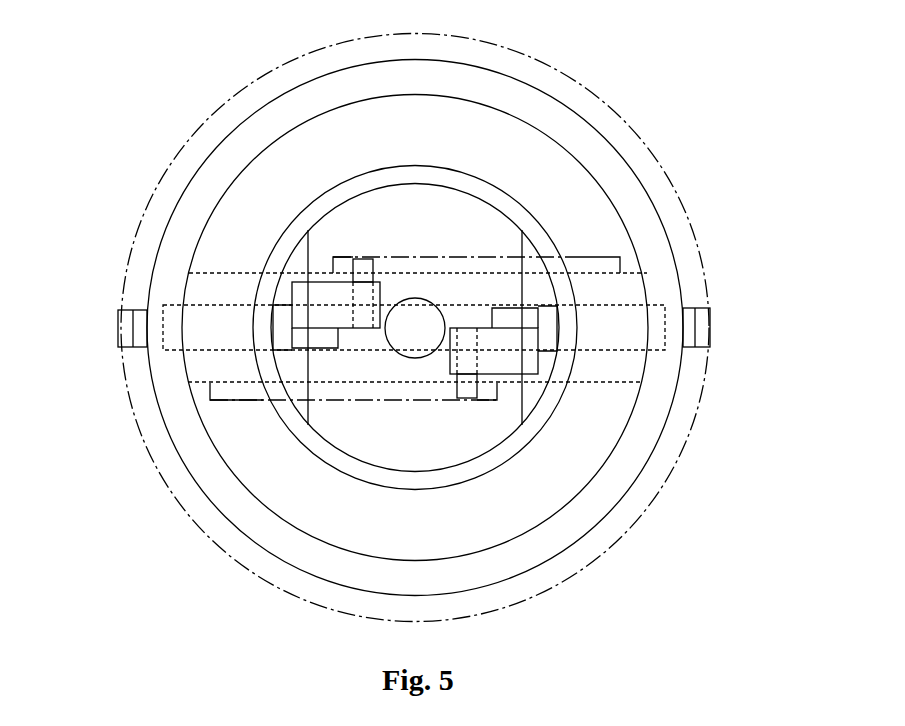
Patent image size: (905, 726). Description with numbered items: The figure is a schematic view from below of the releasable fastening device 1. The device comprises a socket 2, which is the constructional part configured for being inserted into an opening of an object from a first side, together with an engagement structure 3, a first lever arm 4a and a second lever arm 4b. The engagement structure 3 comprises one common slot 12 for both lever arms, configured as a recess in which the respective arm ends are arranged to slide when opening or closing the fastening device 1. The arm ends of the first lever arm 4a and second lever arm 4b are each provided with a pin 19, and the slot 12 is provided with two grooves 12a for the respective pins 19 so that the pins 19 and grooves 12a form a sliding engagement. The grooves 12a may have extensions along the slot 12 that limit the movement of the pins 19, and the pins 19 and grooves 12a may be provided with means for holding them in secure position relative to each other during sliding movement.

The releasable fastening device 1 is at (143, 47).
The socket 2 is at (570, 207).
The engagement structure 3 is at (588, 148).
The first lever arm 4a is at (337, 308).
The second lever arm 4b is at (493, 348).
The slot 12 is at (615, 292).
The grooves 12a is at (605, 265).
The pins 19 is at (357, 259).